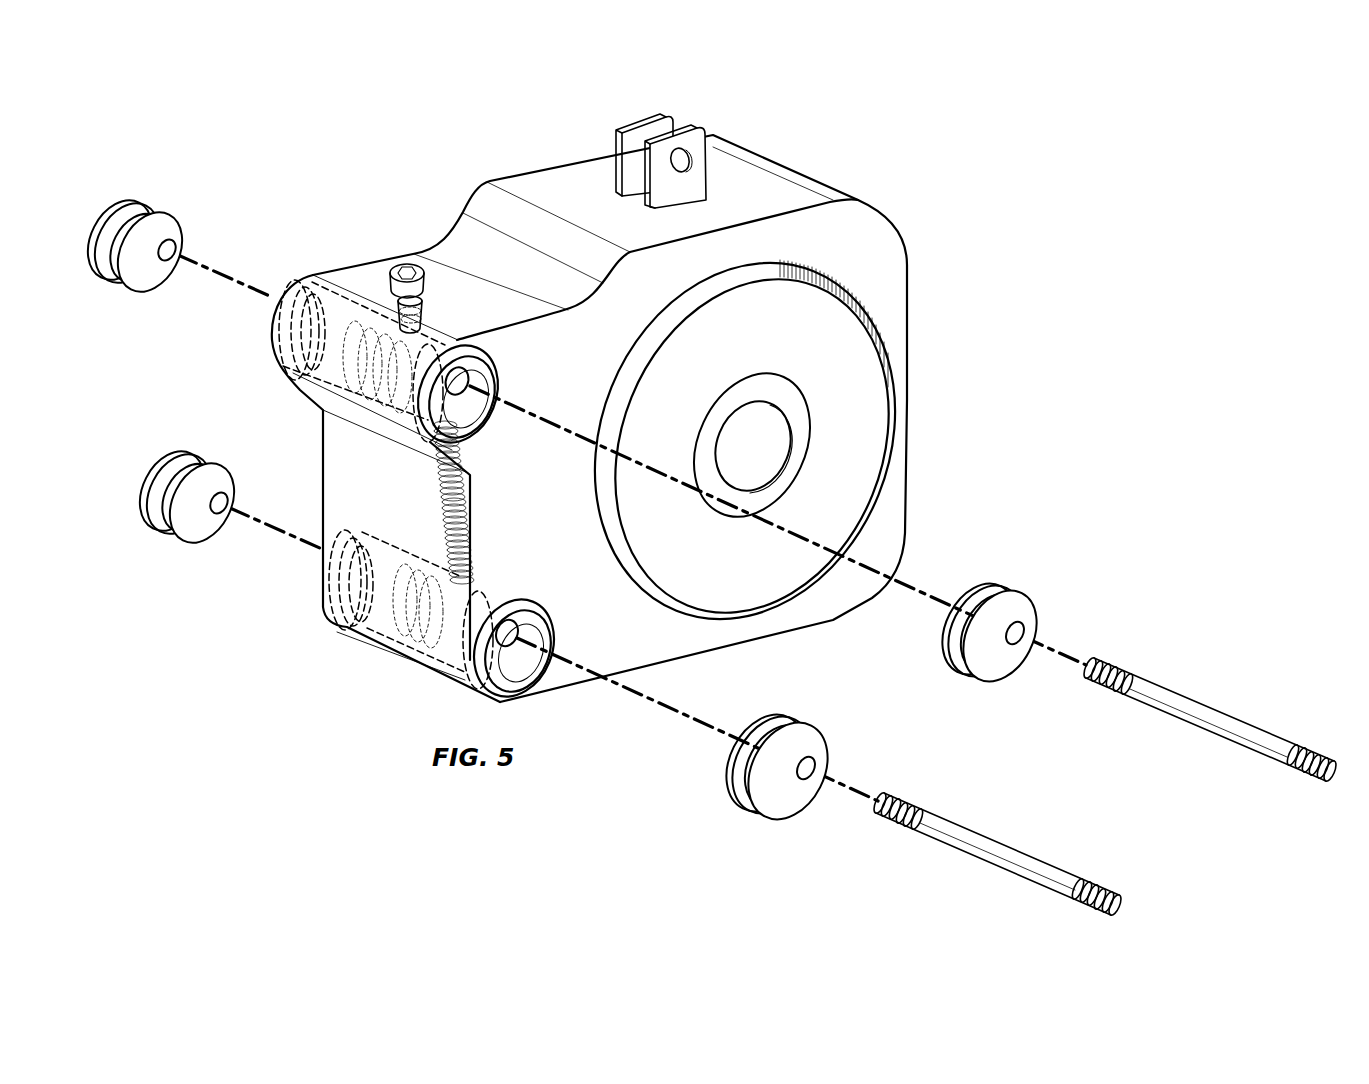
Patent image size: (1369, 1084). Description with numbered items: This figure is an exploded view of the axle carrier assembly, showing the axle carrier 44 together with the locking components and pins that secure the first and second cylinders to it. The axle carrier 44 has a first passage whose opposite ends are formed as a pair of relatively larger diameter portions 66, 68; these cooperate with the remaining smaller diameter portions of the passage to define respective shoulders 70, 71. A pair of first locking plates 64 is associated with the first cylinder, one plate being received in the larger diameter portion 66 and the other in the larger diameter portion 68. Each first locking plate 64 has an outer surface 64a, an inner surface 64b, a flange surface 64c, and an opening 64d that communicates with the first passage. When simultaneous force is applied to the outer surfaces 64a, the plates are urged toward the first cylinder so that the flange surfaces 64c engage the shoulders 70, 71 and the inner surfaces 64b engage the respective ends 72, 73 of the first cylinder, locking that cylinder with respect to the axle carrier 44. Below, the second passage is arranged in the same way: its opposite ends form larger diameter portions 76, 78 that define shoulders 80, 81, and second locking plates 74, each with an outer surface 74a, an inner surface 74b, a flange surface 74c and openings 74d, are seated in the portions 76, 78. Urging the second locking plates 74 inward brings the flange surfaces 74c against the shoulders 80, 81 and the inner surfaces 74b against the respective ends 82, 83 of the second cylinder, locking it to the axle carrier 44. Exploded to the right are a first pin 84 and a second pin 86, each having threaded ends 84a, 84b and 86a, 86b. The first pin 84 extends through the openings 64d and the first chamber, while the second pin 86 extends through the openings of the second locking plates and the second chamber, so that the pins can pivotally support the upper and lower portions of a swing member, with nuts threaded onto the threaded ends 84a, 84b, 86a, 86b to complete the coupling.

The axle carrier 44 is at (790, 165).
The first locking plates 64 is at (576, 420).
The outer surface 64a is at (92, 230).
The inner surface 64b is at (157, 282).
The flange surface 64c is at (155, 205).
The opening 64d is at (178, 247).
The larger diameter portion 66 is at (503, 365).
The larger diameter portion 68 is at (342, 326).
The shoulder 70 is at (485, 403).
The shoulder 71 is at (272, 340).
The end of first cylinder 72 is at (450, 403).
The end of first cylinder 73 is at (307, 293).
The second locking plates 74 is at (493, 649).
The outer surface 74a is at (142, 482).
The inner surface 74b is at (208, 535).
The flange surface 74c is at (205, 462).
The openings 74d is at (232, 500).
The larger diameter portion 76 is at (508, 618).
The larger diameter portion 78 is at (379, 590).
The shoulder 80 is at (533, 636).
The shoulder 81 is at (360, 543).
The end of second cylinder 82 is at (503, 657).
The end of second cylinder 83 is at (333, 587).
The first pin 84 is at (1221, 701).
The threaded end 84a is at (1305, 755).
The threaded end 84b is at (1125, 668).
The second pin 86 is at (1017, 834).
The threaded end 86a is at (1105, 893).
The threaded end 86b is at (918, 798).